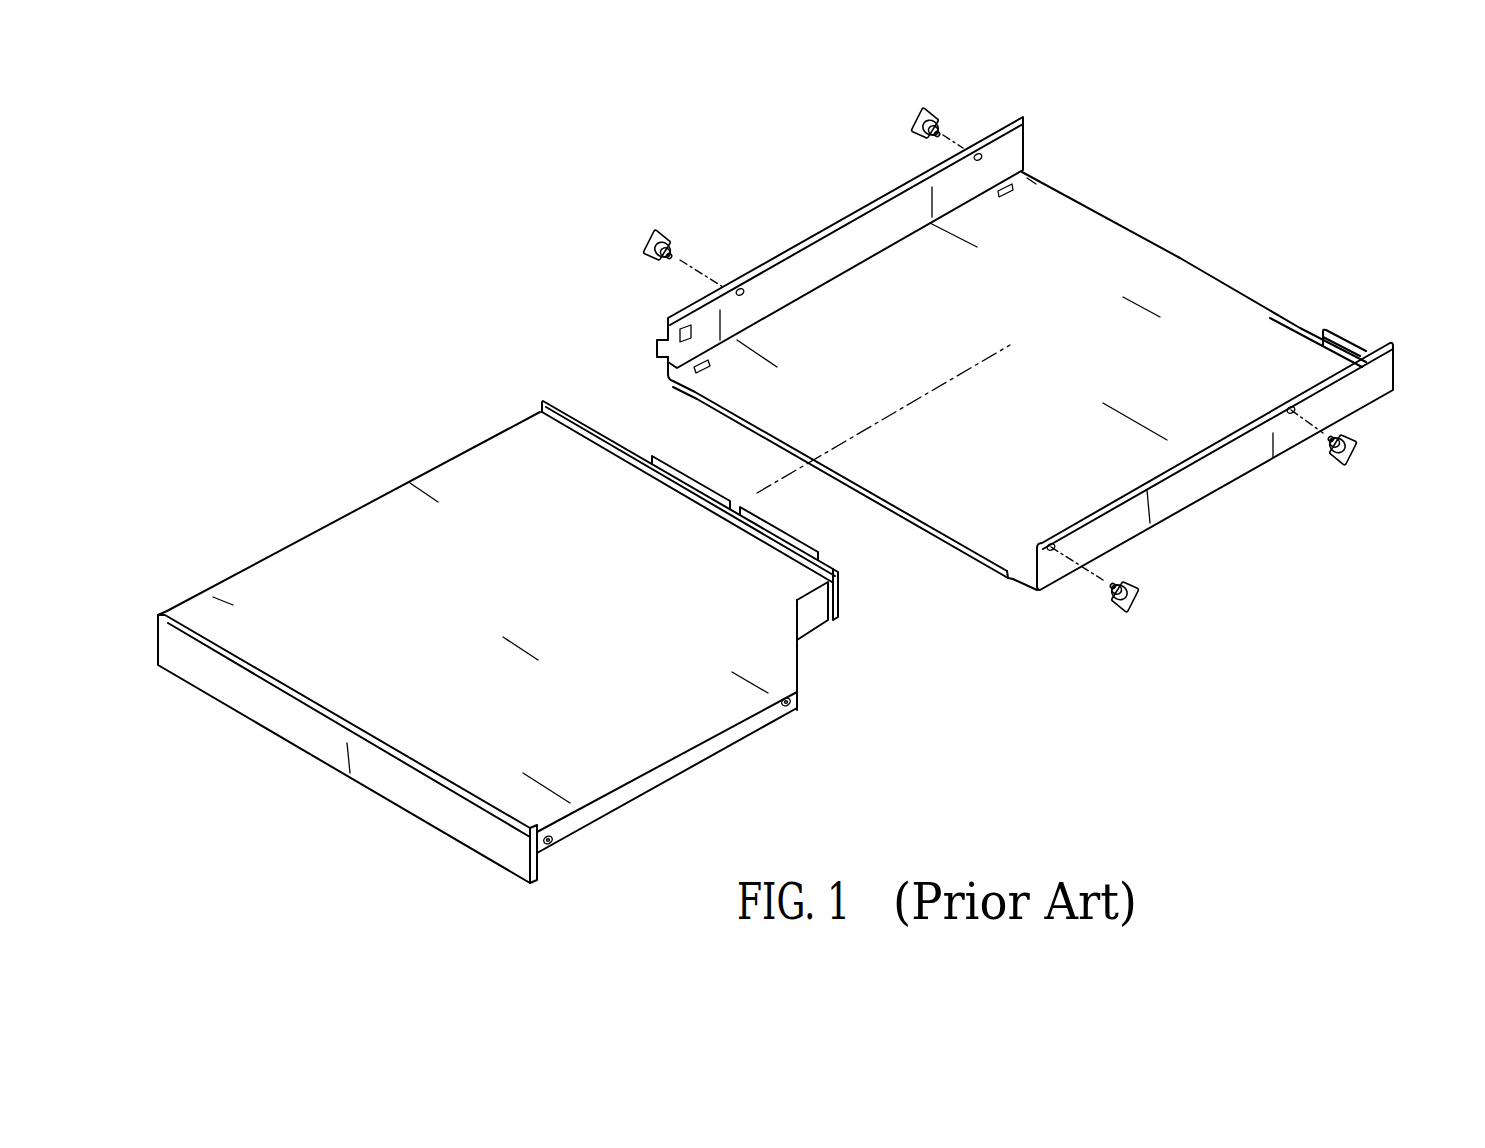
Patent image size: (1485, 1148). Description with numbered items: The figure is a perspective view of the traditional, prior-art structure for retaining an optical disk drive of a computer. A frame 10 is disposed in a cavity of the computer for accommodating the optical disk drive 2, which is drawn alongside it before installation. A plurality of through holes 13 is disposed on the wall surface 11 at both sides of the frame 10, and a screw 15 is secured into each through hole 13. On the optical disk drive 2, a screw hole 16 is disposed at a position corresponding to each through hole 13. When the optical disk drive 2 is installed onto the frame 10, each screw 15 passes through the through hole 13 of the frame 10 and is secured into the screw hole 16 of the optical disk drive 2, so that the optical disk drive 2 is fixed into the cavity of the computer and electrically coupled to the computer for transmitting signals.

The optical disk drive 2 is at (373, 553).
The frame 10 is at (1194, 247).
The wall surface 11 is at (850, 240).
The through hole 13 is at (745, 292).
The screw 15 is at (915, 124).
The screw hole 16 is at (795, 700).